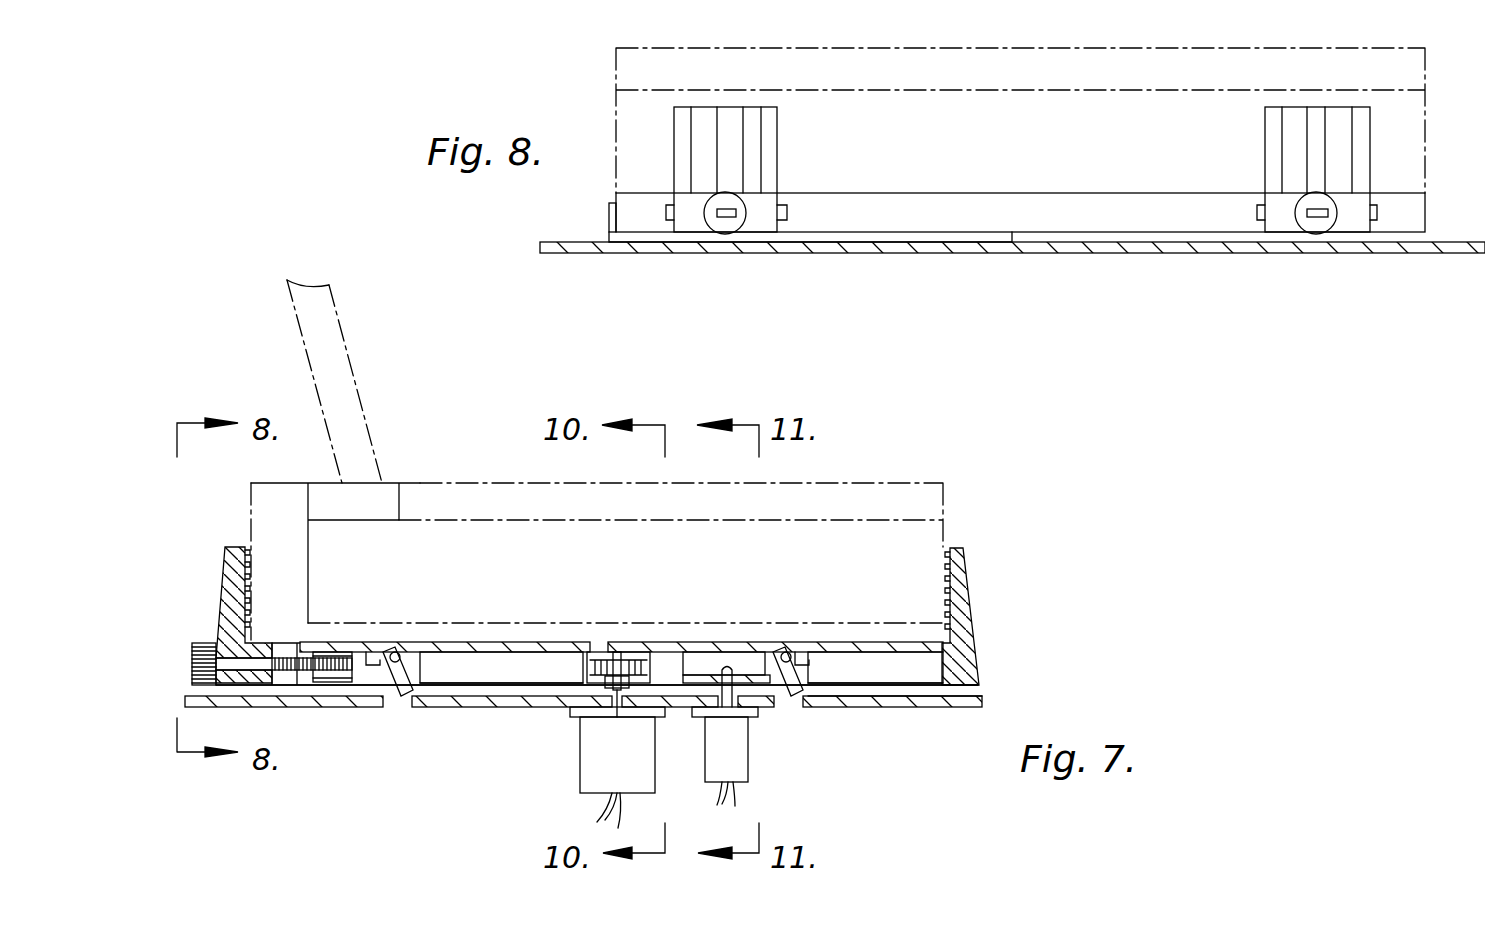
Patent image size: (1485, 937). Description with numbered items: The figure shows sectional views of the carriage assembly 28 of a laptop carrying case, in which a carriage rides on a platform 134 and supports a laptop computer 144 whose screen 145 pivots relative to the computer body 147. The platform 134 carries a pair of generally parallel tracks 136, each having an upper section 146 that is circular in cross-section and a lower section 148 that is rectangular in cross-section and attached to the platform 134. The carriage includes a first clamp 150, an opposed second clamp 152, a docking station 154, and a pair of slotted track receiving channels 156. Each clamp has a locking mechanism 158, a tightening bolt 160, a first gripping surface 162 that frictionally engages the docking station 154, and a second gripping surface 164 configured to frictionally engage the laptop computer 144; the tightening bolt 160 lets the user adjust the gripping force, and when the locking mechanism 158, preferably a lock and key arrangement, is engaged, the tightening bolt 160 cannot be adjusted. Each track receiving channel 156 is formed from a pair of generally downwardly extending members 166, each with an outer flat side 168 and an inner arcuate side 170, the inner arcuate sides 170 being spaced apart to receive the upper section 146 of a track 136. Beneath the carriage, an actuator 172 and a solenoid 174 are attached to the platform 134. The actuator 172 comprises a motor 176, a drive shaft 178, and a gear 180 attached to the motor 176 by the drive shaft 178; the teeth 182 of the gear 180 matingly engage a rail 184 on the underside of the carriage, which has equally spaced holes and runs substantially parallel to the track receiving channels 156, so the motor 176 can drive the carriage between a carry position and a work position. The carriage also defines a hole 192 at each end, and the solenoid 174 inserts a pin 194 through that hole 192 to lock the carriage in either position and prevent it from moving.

In FIG. 8, the carriage assembly 28 is at (598, 58).
In FIG. 7, the carriage assembly 28 is at (1065, 588).
In FIG. 7, the platform 134 is at (948, 708).
In FIG. 8, the tracks 136 is at (608, 233).
In FIG. 7, the tracks 136 is at (395, 700).
In FIG. 8, the laptop computer 144 is at (1055, 66).
In FIG. 7, the laptop computer 144 is at (338, 365).
In FIG. 7, the screen 145 is at (360, 367).
In FIG. 8, the upper section 146 is at (609, 210).
In FIG. 7, the upper section 146 is at (398, 652).
In FIG. 7, the computer body 147 is at (917, 448).
In FIG. 7, the lower section 148 is at (382, 700).
In FIG. 8, the first clamp 150 is at (1270, 118).
In FIG. 8, the second clamp 152 is at (767, 128).
In FIG. 7, the second clamp 152 is at (225, 572).
In FIG. 8, the docking station 154 is at (1078, 148).
In FIG. 7, the docking station 154 is at (265, 493).
In FIG. 7, the track receiving channels 156 is at (410, 660).
In FIG. 8, the locking mechanism 158 is at (736, 213).
In FIG. 7, the locking mechanism 158 is at (200, 648).
In FIG. 7, the tightening bolt 160 is at (330, 672).
In FIG. 7, the first gripping surface 162 is at (945, 572).
In FIG. 7, the second gripping surface 164 is at (250, 576).
In FIG. 7, the downwardly extending members 166 is at (372, 648).
In FIG. 7, the outer flat side 168 is at (420, 682).
In FIG. 7, the inner arcuate side 170 is at (403, 690).
In FIG. 7, the actuator 172 is at (580, 738).
In FIG. 7, the solenoid 174 is at (735, 772).
In FIG. 7, the motor 176 is at (589, 759).
In FIG. 7, the drive shaft 178 is at (617, 697).
In FIG. 7, the gear 180 is at (610, 636).
In FIG. 7, the teeth 182 is at (650, 652).
In FIG. 7, the rail 184 is at (585, 655).
In FIG. 7, the hole 192 is at (725, 665).
In FIG. 7, the pin 194 is at (725, 697).